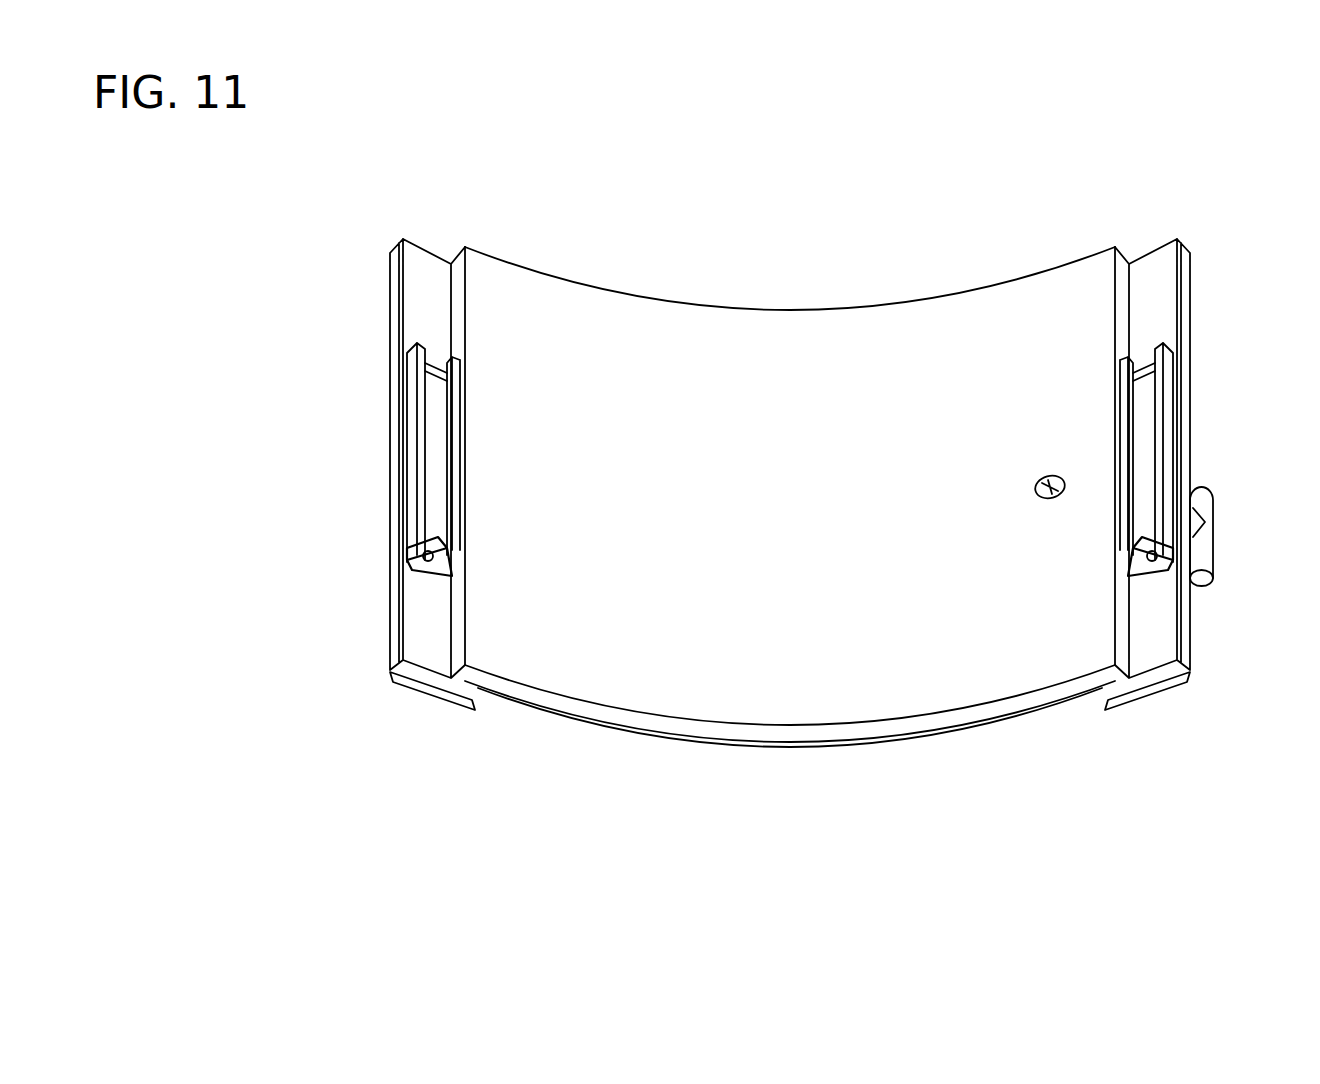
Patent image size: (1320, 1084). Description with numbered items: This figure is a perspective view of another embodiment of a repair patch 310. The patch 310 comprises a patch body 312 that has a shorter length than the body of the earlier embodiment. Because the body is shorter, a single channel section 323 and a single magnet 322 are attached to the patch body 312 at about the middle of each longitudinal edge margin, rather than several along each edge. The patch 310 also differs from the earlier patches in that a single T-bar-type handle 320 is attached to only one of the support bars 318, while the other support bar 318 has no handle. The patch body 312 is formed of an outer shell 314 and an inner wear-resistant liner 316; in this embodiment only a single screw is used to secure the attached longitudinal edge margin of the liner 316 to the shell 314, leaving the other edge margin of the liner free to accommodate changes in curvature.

The patch 310 is at (469, 832).
The patch body 312 is at (683, 748).
The shell 314 is at (957, 740).
The liner 316 is at (845, 742).
The support bar 318 is at (426, 688).
The T-bar-type handle 320 is at (1213, 553).
The magnet 322 is at (437, 496).
The channel section 323 is at (412, 418).